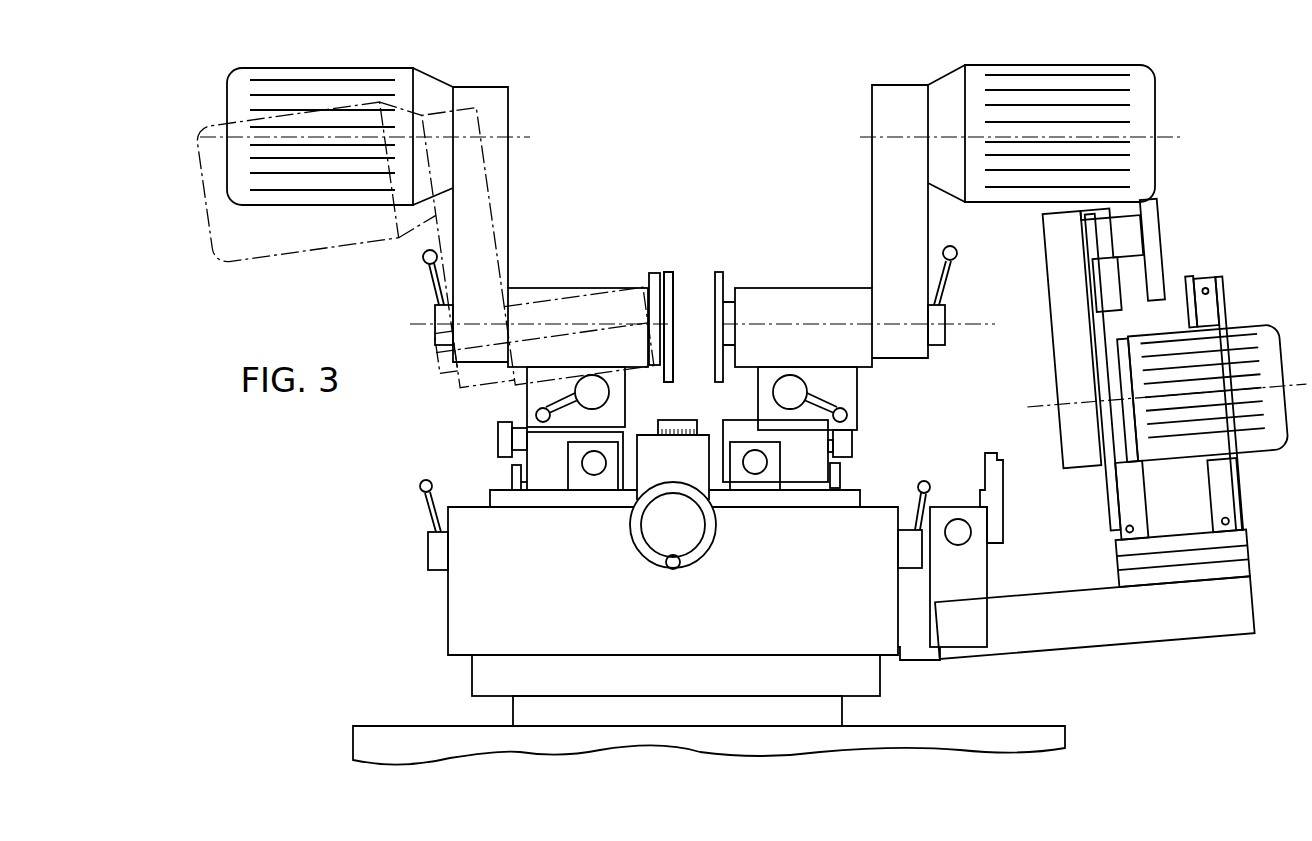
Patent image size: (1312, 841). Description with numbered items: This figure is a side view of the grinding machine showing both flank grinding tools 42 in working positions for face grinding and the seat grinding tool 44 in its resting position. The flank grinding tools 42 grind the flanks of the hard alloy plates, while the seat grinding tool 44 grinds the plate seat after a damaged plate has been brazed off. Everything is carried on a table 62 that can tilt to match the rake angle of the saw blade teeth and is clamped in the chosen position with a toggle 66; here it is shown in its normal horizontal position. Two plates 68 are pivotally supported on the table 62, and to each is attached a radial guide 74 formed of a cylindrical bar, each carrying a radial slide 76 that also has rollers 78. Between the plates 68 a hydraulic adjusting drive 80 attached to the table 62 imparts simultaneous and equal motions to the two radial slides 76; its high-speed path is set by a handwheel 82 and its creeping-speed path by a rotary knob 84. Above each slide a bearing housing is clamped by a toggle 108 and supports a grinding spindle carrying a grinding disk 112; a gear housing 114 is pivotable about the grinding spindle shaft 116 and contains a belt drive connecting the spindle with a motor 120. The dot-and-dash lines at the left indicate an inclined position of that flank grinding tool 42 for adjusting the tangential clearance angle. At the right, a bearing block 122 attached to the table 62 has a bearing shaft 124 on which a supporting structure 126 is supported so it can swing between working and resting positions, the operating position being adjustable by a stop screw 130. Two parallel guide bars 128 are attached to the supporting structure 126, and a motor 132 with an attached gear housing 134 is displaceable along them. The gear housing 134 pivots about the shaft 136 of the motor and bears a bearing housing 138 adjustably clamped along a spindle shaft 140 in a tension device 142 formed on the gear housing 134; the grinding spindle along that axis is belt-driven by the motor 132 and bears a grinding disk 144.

The flank grinding tool 42 is at (757, 118).
The seat grinding tool 44 is at (1258, 234).
The table 62 is at (455, 500).
The toggle 66 is at (432, 508).
The plate 68 is at (605, 500).
The radial guide 74 is at (592, 470).
The radial slide 76 is at (545, 477).
The roller 78 is at (510, 475).
The hydraulic adjusting drive 80 is at (700, 470).
The handwheel 82 is at (700, 560).
The rotary knob 84 is at (680, 420).
The toggle 108 is at (425, 262).
The grinding disk 112 is at (720, 272).
The gear housing 114 is at (505, 180).
The grinding spindle shaft 116 is at (435, 320).
The motor 120 is at (405, 75).
The bearing block 122 is at (910, 645).
The bearing shaft 124 is at (958, 540).
The supporting structure 126 is at (1098, 654).
The guide bar 128 is at (1212, 494).
The stop screw 130 is at (985, 455).
The motor 132 is at (1165, 367).
The gear housing 134 is at (1042, 342).
The shaft of the motor 136 is at (1036, 378).
The bearing housing 138 is at (1162, 212).
The spindle shaft 140 is at (1167, 266).
The tension device 142 is at (1038, 214).
The grinding disk 144 is at (1191, 246).